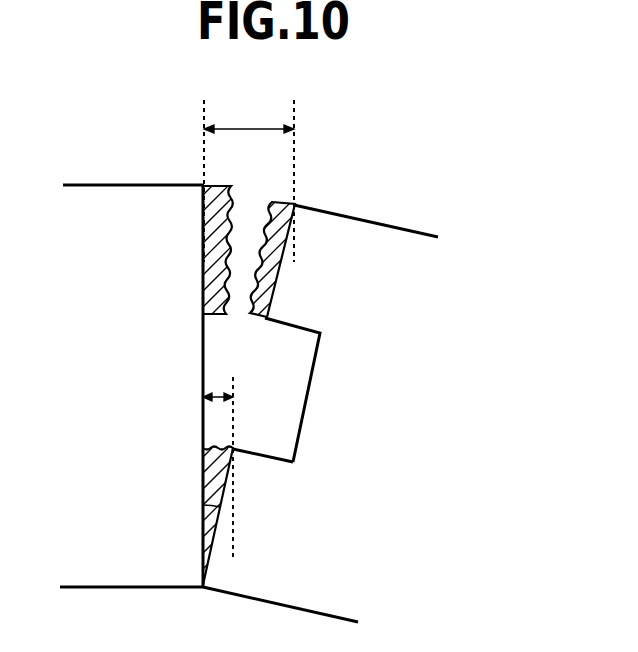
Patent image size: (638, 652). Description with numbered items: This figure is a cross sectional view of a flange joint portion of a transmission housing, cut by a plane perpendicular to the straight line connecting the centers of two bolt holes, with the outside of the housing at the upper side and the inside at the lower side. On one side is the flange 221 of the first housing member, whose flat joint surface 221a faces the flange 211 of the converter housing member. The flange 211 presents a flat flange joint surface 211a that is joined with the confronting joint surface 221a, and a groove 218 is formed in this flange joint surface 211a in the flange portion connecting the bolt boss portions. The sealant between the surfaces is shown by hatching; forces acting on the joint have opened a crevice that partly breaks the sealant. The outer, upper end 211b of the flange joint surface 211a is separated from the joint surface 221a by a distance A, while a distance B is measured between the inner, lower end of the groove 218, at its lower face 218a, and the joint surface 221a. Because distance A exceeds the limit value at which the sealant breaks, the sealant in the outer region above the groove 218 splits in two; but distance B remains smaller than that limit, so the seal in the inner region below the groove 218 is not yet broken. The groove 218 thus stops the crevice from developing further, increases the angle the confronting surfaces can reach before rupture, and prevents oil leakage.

The flange 221 is at (112, 185).
The joint surface 221a is at (203, 347).
The flange 211 is at (393, 225).
The flange joint surface 211a is at (266, 284).
The outer end of flange joint surface 211b is at (294, 205).
The groove 218 is at (290, 395).
The lower surface of protrusion 218a is at (233, 449).
The distance A is at (249, 181).
The distance B is at (218, 463).